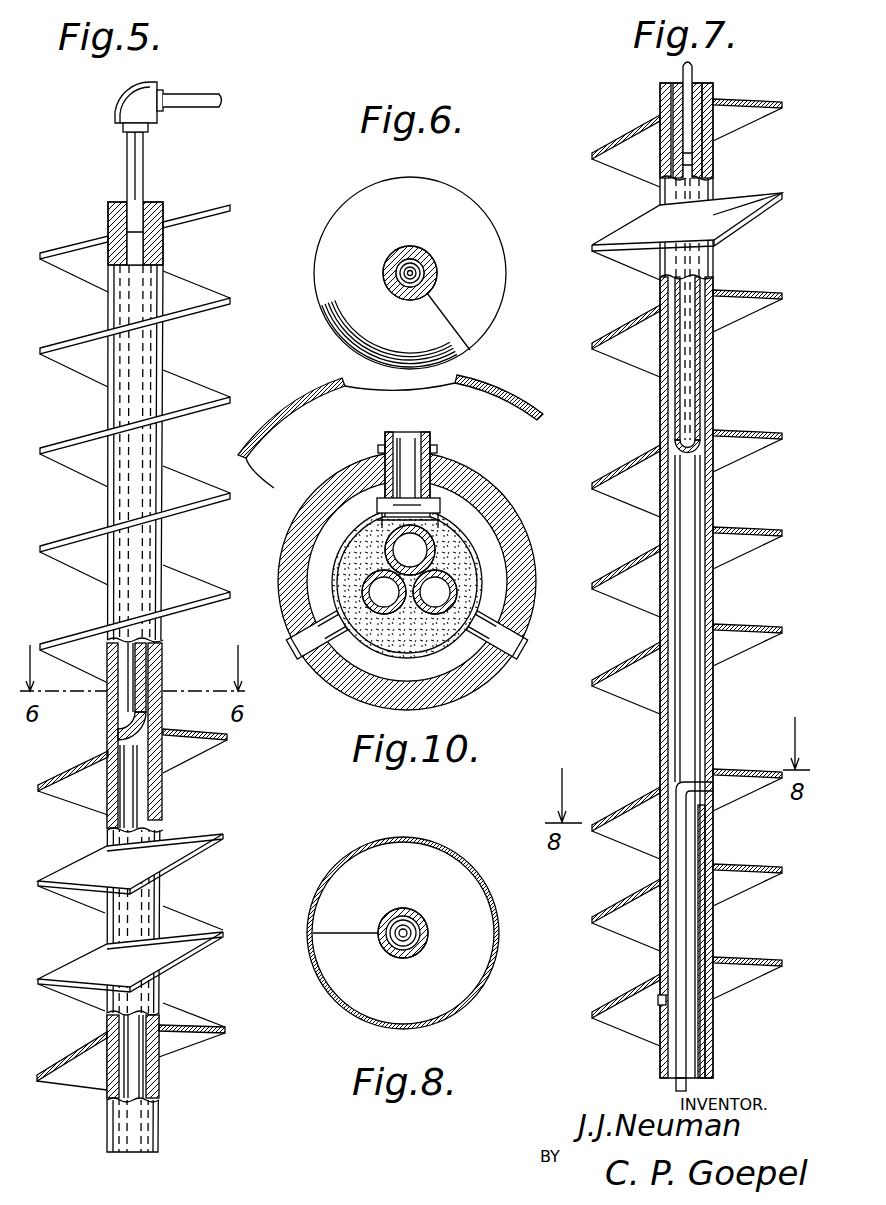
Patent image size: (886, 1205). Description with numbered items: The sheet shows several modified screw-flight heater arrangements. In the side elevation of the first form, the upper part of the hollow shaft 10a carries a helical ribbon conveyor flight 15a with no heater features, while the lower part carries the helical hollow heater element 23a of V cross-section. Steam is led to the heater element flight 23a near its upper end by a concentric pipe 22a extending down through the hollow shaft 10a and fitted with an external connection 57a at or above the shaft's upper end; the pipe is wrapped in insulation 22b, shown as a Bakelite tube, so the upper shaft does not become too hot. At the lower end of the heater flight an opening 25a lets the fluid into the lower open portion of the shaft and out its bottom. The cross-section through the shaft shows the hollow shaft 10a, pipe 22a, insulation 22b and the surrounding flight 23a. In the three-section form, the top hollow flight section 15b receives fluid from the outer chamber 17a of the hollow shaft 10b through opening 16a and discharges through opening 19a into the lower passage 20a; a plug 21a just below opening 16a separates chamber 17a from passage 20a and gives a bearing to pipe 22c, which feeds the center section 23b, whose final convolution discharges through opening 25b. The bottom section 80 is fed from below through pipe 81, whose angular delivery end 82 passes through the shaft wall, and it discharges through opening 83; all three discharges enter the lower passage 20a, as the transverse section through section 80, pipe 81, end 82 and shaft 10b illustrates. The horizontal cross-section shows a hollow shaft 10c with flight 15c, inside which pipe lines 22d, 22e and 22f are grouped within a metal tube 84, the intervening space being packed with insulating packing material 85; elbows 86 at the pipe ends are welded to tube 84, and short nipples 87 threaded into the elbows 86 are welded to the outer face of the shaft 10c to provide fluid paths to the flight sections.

In FIG. 5, the external connection 57a is at (218, 84).
In FIG. 5, the concentric pipe 22a is at (141, 157).
In FIG. 6, the concentric pipe 22a is at (414, 268).
In FIG. 5, the insulation 22b is at (163, 208).
In FIG. 6, the insulation 22b is at (397, 262).
In FIG. 5, the helical ribbon conveyor flight 15a is at (139, 444).
In FIG. 5, the helical hollow heater element 23a is at (190, 848).
In FIG. 6, the helical hollow heater element 23a is at (476, 330).
In FIG. 5, the opening 25a is at (152, 1047).
In FIG. 6, the hollow shaft 10a is at (397, 291).
In FIG. 10, the flight 15c is at (404, 431).
In FIG. 10, the hollow shaft 10c is at (346, 470).
In FIG. 10, the short nipples 87 is at (434, 438).
In FIG. 10, the elbows 86 is at (440, 522).
In FIG. 10, the packing material 85 is at (362, 553).
In FIG. 10, the metal tube 84 is at (415, 650).
In FIG. 10, the pipe line 22d is at (387, 602).
In FIG. 10, the pipe line 22e is at (442, 588).
In FIG. 10, the pipe line 22f is at (418, 545).
In FIG. 8, the bottom hollow flight section 80 is at (480, 1000).
In FIG. 7, the bottom hollow flight section 80 is at (627, 925).
In FIG. 8, the pipe 81 is at (395, 937).
In FIG. 7, the pipe 81 is at (675, 1088).
In FIG. 8, the angular delivery end 82 is at (429, 938).
In FIG. 7, the angular delivery end 82 is at (710, 787).
In FIG. 8, the hollow shaft 10b is at (398, 956).
In FIG. 7, the hollow shaft 10b is at (714, 90).
In FIG. 7, the pipe 22c is at (681, 72).
In FIG. 7, the outer chamber 17a is at (662, 99).
In FIG. 7, the opening 16a is at (668, 136).
In FIG. 7, the plug 21a is at (697, 153).
In FIG. 7, the top hollow flight section 15b is at (640, 318).
In FIG. 7, the opening 19a is at (650, 338).
In FIG. 7, the center hollow flight section 23b is at (737, 520).
In FIG. 7, the lower passage 20a is at (687, 612).
In FIG. 7, the discharge opening 25b is at (662, 660).
In FIG. 7, the discharge opening 83 is at (657, 1003).